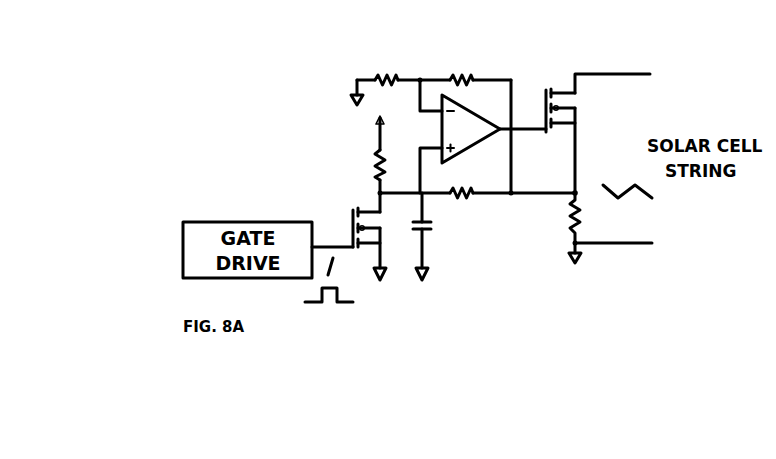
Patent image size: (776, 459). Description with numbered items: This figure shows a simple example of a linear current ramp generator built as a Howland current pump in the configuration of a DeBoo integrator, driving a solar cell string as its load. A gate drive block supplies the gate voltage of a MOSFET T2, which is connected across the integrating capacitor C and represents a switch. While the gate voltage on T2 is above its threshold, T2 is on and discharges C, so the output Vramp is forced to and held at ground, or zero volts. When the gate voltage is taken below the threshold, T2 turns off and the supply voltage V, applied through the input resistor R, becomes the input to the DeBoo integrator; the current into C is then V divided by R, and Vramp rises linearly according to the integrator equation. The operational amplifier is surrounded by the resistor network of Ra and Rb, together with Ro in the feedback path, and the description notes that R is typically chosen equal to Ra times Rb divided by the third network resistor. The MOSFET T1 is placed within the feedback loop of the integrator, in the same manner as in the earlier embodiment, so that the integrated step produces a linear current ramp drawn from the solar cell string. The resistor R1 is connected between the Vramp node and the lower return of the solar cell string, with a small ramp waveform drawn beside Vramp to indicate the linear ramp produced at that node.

The MOSFET T1 is at (562, 83).
The MOSFET T2 is at (367, 205).
The resistor R is at (385, 165).
The resistor Ra is at (386, 72).
The resistor Rb is at (461, 72).
The resistor Ro is at (461, 185).
The resistor R1 is at (583, 217).
The capacitor C is at (428, 236).
The voltage V is at (384, 127).
The ramp voltage Vramp is at (578, 188).